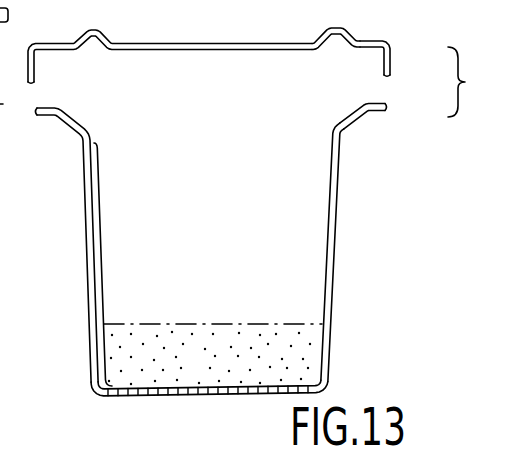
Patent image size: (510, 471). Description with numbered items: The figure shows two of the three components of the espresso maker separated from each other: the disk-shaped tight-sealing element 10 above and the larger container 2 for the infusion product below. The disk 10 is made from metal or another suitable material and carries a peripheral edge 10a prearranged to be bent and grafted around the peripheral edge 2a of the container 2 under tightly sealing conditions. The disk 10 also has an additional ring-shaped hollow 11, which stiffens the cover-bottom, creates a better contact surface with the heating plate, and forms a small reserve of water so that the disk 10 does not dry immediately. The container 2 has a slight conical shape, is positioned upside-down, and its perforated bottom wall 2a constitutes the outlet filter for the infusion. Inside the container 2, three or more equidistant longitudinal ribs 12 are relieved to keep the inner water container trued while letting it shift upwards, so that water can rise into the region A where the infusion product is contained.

The disk 10 is at (204, 43).
The ring-shaped hollow 11 is at (340, 33).
The peripheral edge 10a is at (394, 72).
The container 2 is at (337, 263).
The perforated bottom wall 2a is at (358, 117).
The longitudinal ribs 12 is at (100, 246).
The chamber A is at (213, 354).